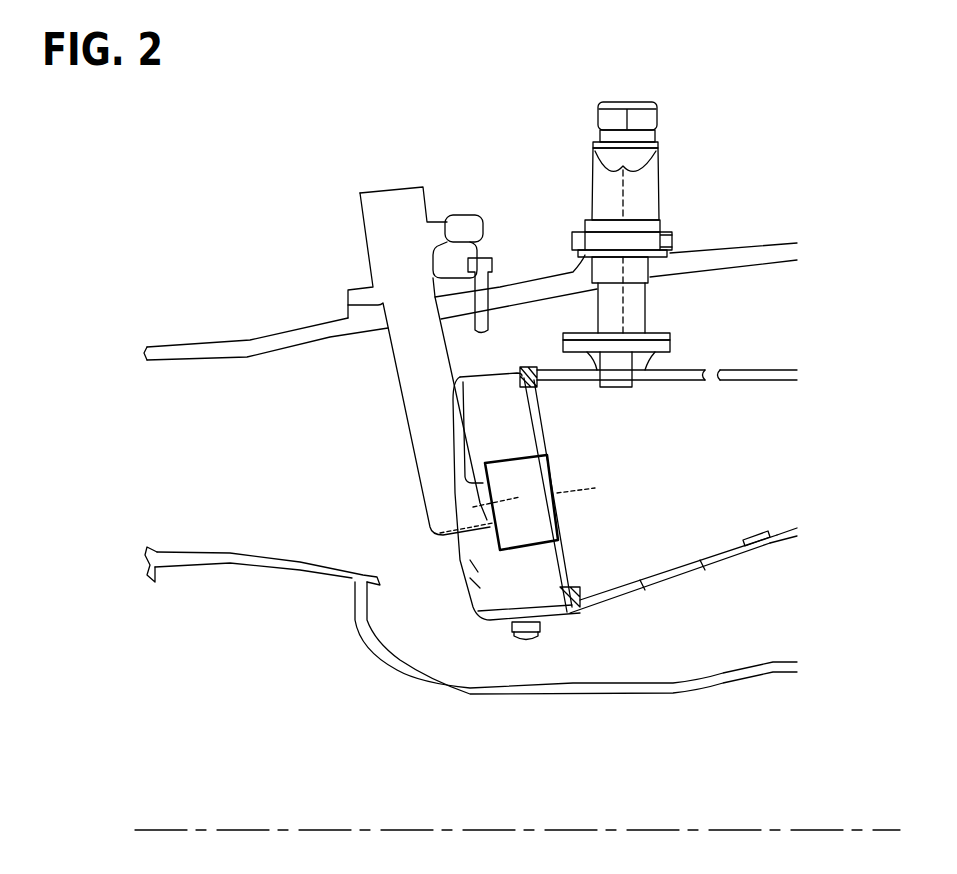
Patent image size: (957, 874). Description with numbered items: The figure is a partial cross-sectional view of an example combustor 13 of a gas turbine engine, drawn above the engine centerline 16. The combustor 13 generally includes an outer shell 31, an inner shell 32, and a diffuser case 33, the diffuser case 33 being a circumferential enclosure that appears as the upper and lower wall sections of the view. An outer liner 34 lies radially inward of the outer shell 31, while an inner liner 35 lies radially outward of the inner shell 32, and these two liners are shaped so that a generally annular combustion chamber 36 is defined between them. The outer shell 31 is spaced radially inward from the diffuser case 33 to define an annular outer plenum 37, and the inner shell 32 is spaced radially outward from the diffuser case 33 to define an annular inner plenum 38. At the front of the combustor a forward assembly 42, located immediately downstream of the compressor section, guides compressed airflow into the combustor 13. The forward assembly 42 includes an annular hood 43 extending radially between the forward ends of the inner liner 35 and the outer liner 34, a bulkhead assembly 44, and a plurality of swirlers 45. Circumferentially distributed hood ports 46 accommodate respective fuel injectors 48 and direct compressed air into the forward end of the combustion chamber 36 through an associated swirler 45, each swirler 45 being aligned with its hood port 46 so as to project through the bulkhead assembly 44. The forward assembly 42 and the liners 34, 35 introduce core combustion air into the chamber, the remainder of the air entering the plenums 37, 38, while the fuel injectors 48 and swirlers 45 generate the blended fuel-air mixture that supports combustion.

The combustor 13 is at (880, 148).
The engine centerline axis 16 is at (643, 818).
The outer shell 31 is at (686, 376).
The inner shell 32 is at (727, 557).
The diffuser case 33 is at (763, 240).
The outer liner 34 is at (728, 383).
The inner liner 35 is at (752, 530).
The combustion chamber 36 is at (703, 467).
The annular outer plenum 37 is at (694, 317).
The annular inner plenum 38 is at (677, 647).
The forward assembly 42 is at (489, 628).
The annular hood 43 is at (468, 584).
The bulkhead assembly 44 is at (558, 438).
The swirler 45 is at (562, 530).
The hood port 46 is at (468, 565).
The fuel injector 48 is at (405, 375).